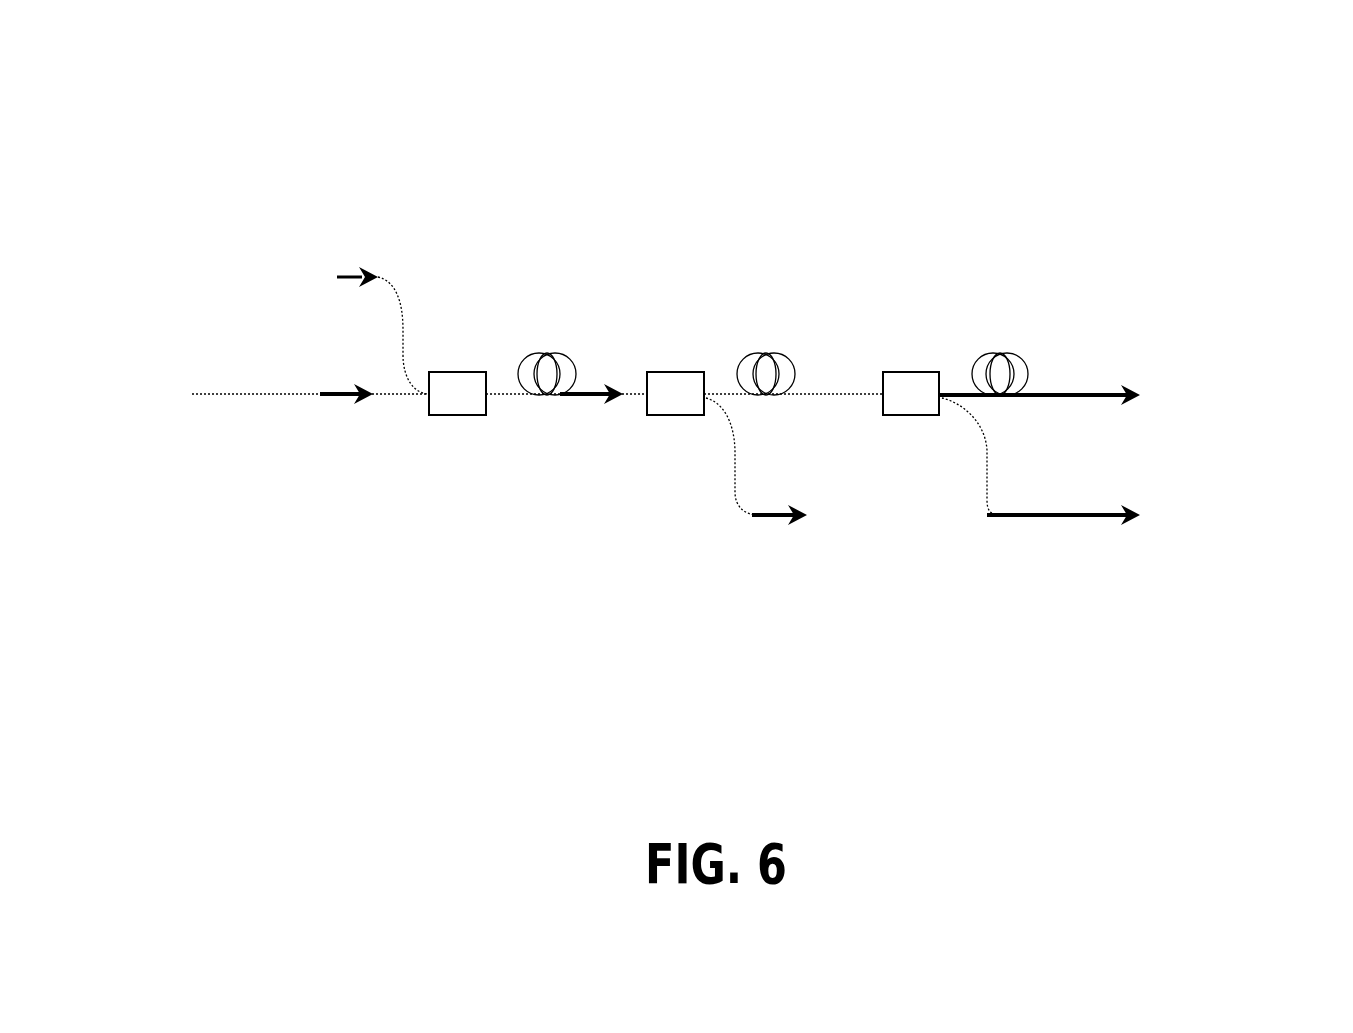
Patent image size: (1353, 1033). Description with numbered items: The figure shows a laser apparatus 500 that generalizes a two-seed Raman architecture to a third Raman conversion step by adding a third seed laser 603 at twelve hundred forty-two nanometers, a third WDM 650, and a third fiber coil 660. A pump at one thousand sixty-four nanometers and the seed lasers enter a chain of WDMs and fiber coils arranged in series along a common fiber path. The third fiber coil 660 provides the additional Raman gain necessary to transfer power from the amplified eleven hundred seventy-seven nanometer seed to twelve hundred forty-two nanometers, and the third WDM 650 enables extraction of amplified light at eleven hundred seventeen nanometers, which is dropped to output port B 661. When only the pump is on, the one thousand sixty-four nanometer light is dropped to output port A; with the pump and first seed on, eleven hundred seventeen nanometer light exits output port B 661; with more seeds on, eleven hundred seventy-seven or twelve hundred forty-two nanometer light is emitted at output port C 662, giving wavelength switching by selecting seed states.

The laser apparatus 500 is at (592, 118).
The third seed laser 603 is at (254, 294).
The third WDM 650 is at (932, 370).
The third fiber coil 660 is at (1040, 375).
The output port C 662 is at (1125, 416).
The output port B 661 is at (1122, 484).